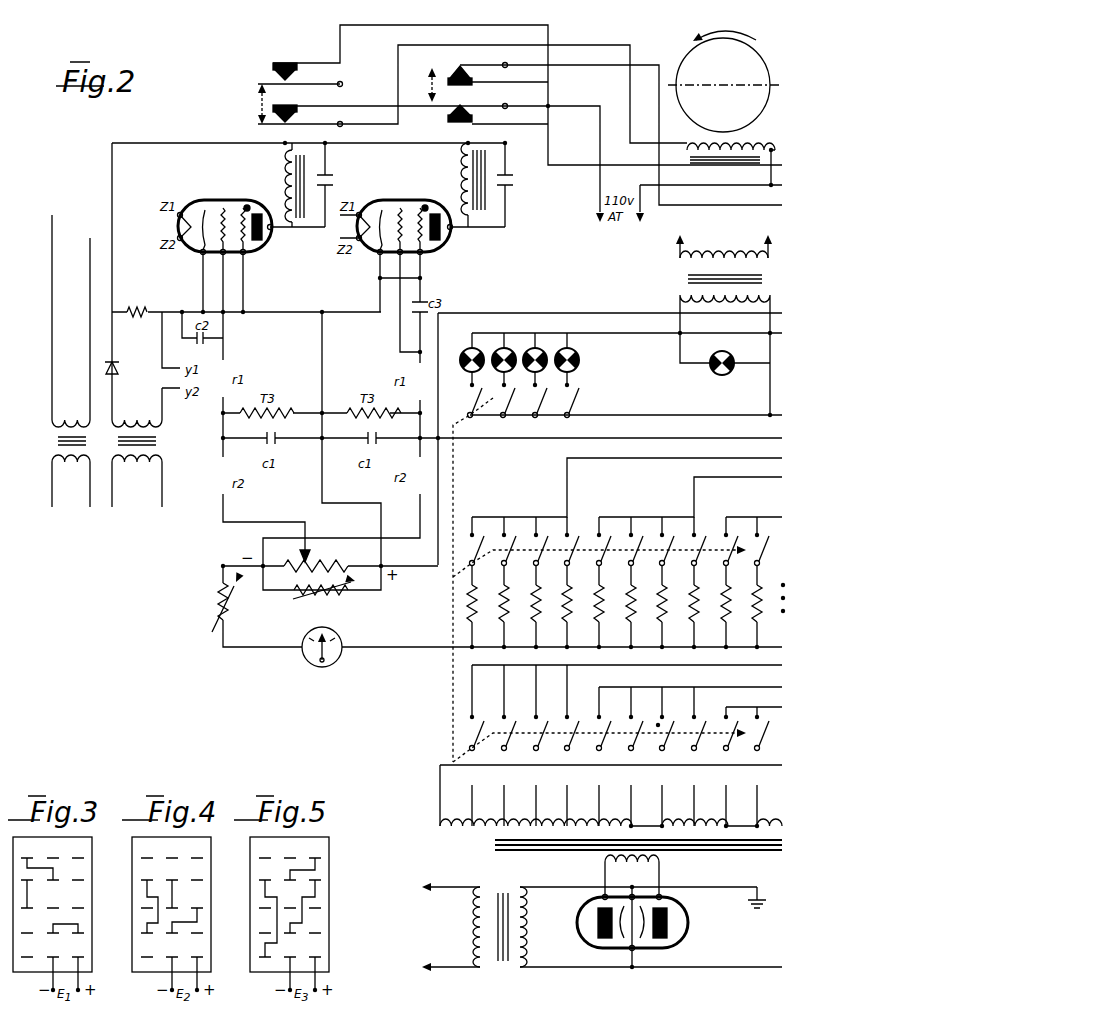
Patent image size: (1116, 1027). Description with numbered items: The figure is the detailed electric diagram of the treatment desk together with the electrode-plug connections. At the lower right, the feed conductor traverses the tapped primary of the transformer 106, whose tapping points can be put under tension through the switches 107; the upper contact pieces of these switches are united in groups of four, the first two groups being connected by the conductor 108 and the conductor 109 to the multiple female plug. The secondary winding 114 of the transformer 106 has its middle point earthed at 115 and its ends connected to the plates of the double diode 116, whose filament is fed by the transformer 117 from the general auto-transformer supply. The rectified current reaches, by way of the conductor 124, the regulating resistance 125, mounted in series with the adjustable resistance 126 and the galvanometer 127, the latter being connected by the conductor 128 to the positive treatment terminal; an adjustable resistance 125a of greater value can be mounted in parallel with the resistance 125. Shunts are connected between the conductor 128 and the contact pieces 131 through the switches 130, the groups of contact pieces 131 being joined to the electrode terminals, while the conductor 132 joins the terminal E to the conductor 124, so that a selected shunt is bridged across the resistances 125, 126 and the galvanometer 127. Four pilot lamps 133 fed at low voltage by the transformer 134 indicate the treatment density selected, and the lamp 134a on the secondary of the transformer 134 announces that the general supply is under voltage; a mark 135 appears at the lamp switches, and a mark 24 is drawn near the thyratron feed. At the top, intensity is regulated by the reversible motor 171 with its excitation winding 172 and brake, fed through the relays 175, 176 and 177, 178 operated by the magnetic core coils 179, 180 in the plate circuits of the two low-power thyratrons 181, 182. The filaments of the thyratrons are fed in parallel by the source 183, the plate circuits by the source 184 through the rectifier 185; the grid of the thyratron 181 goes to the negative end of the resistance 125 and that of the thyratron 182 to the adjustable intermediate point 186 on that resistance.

The resistor 24 is at (138, 301).
The transformer 106 is at (488, 846).
The switches 107 is at (466, 727).
The conductor 108 is at (641, 665).
The conductor 109 is at (739, 687).
The secondary winding 114 is at (661, 862).
The earth connection 115 is at (752, 902).
The double diode 116 is at (690, 922).
The filament transformer 117 is at (504, 890).
The conductor 124 is at (442, 404).
The regulating resistance 125 is at (343, 566).
The adjustable resistance 125a is at (347, 597).
The adjustable resistance 126 is at (227, 613).
The galvanometer 127 is at (346, 638).
The conductor 128 is at (408, 647).
The switches 130 is at (599, 580).
The contact pieces 131 is at (466, 532).
The conductor 132 is at (633, 438).
The pilot lamps 133 is at (583, 367).
The transformer 134 is at (684, 278).
The lamp 134a is at (712, 368).
The switches 135 is at (582, 404).
The reversible motor 171 is at (750, 56).
The excitation winding 172 is at (742, 146).
The relay 175 is at (448, 117).
The relay 176 is at (452, 70).
The relay 177 is at (260, 105).
The relay 178 is at (276, 63).
The magnetic core coil 179 is at (460, 170).
The magnetic core coil 180 is at (282, 168).
The thyratron 181 is at (432, 252).
The thyratron 182 is at (250, 252).
The filament source 183 is at (46, 441).
The plate supply source 184 is at (166, 441).
The rectifier 185 is at (116, 358).
The adjustable intermediate point 186 is at (300, 558).